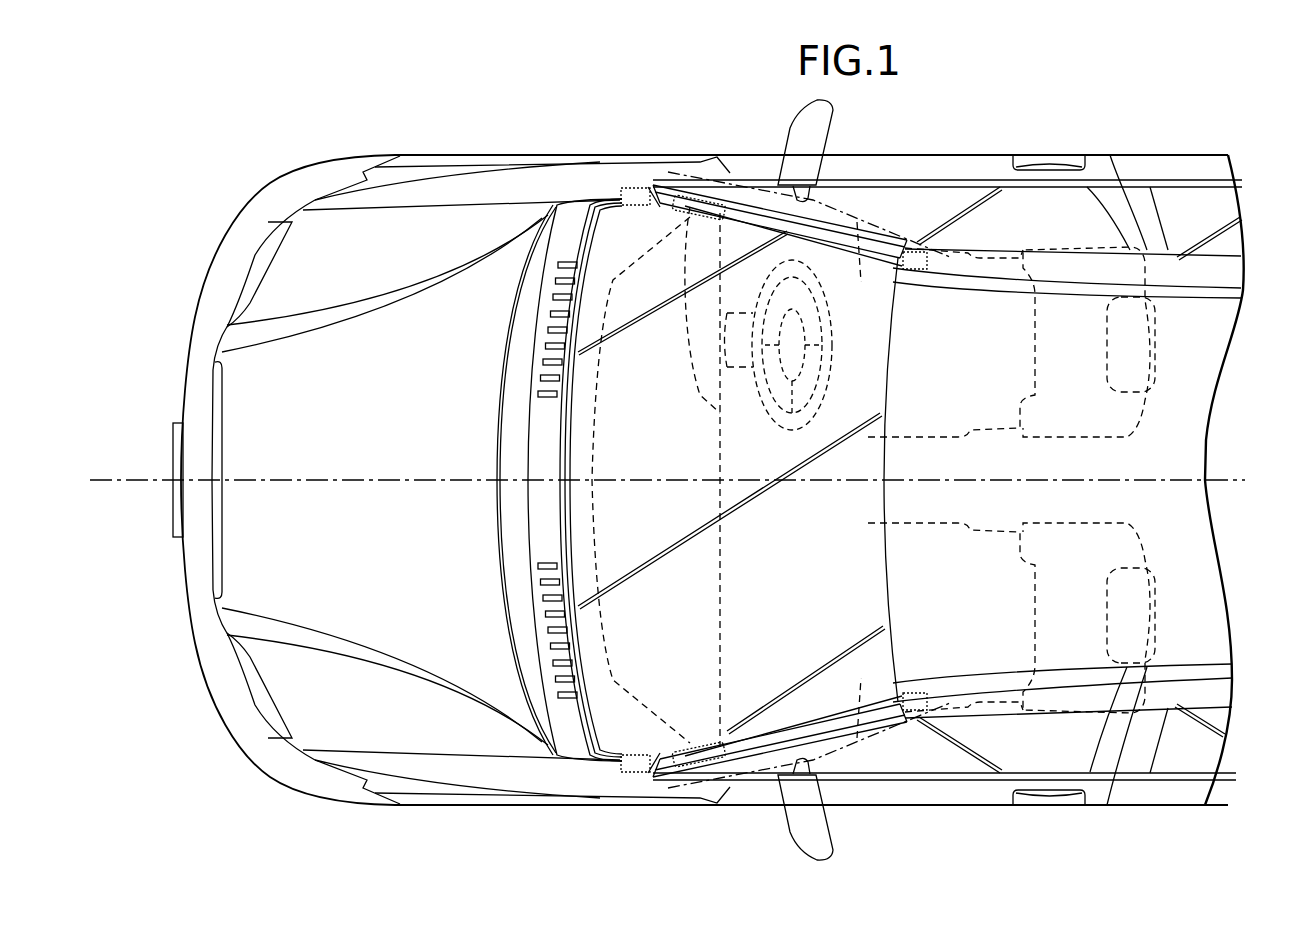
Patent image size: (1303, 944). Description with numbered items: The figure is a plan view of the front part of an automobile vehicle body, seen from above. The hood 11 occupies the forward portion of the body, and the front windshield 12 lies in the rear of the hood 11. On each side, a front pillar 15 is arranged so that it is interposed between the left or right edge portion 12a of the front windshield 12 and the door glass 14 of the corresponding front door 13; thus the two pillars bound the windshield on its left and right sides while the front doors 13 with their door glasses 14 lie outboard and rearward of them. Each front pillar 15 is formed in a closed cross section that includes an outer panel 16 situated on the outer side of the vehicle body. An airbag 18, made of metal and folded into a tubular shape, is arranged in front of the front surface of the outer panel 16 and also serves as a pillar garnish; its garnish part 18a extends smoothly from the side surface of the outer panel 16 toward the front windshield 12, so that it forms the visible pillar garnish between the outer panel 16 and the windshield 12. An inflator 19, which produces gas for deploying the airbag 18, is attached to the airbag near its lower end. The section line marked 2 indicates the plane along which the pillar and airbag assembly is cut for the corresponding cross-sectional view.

The hood 11 is at (413, 228).
The front windshield 12 is at (614, 433).
The edge portion of the front windshield 12a is at (644, 187).
The front door 13 is at (988, 160).
The door glass 14 is at (1083, 210).
The front pillar 15 is at (847, 215).
The outer panel 16 is at (876, 229).
The airbag 18 is at (758, 208).
The garnish part 18a is at (826, 236).
The inflator 19 is at (695, 214).
The section line 2- 2 is at (777, 146).